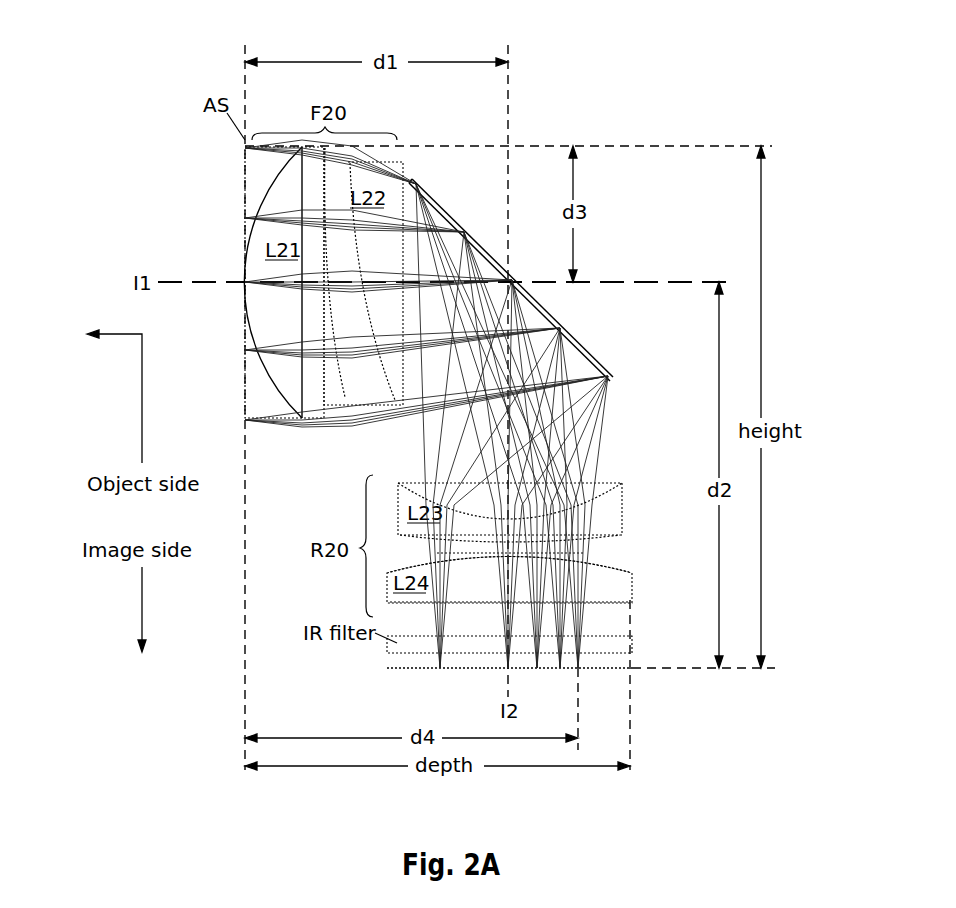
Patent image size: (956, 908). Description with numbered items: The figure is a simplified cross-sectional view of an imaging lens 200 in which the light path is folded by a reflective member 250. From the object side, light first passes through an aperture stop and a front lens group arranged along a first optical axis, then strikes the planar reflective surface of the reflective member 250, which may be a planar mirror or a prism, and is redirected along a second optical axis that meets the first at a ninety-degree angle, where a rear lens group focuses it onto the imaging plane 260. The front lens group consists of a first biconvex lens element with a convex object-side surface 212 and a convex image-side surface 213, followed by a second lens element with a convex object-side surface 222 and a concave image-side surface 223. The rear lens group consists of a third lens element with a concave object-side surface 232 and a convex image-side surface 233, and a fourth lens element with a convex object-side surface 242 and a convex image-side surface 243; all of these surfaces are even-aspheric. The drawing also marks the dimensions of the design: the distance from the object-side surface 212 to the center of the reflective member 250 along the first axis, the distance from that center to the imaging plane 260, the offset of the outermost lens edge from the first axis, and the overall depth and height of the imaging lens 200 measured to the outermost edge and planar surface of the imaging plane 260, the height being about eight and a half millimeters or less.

The imaging lens 200 is at (694, 94).
The object-side surface of first lens element 212 is at (272, 380).
The image-side surface of first lens element 213 is at (324, 393).
The object-side surface of second lens element 222 is at (340, 362).
The image-side surface of second lens element 223 is at (372, 325).
The object-side surface of third lens element 232 is at (583, 498).
The image-side surface of third lens element 233 is at (602, 537).
The object-side surface of fourth lens element 242 is at (605, 563).
The image-side surface of fourth lens element 243 is at (592, 602).
The reflective member 250 is at (448, 217).
The imaging plane 260 is at (457, 667).